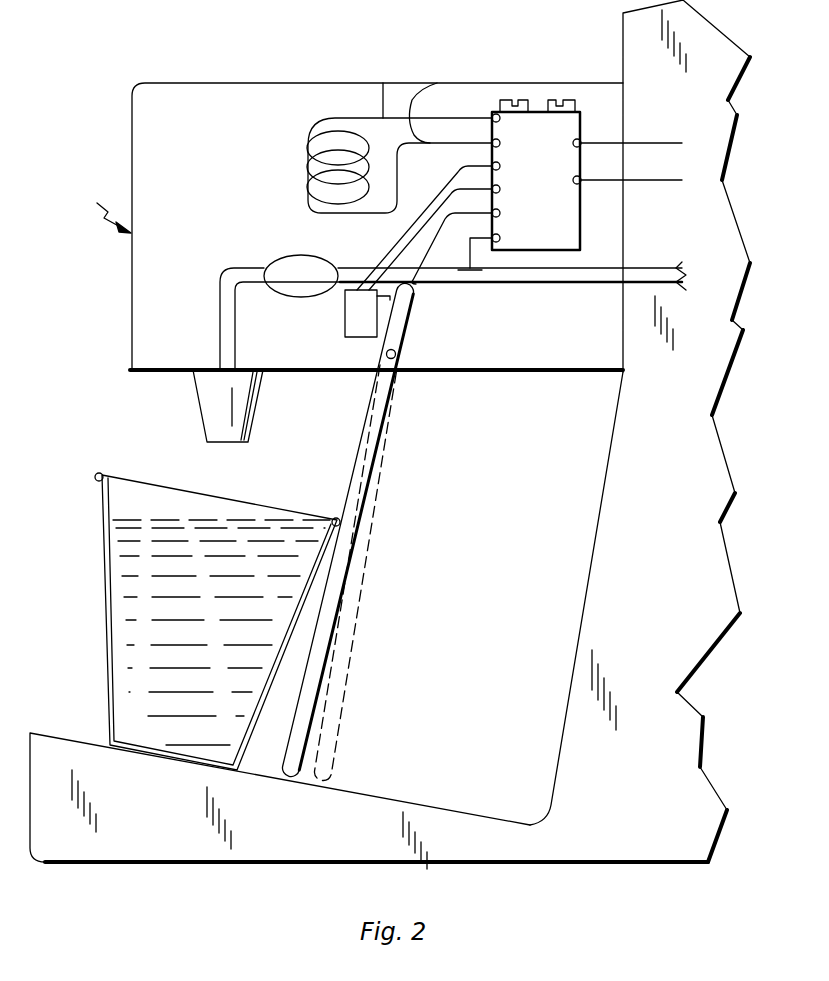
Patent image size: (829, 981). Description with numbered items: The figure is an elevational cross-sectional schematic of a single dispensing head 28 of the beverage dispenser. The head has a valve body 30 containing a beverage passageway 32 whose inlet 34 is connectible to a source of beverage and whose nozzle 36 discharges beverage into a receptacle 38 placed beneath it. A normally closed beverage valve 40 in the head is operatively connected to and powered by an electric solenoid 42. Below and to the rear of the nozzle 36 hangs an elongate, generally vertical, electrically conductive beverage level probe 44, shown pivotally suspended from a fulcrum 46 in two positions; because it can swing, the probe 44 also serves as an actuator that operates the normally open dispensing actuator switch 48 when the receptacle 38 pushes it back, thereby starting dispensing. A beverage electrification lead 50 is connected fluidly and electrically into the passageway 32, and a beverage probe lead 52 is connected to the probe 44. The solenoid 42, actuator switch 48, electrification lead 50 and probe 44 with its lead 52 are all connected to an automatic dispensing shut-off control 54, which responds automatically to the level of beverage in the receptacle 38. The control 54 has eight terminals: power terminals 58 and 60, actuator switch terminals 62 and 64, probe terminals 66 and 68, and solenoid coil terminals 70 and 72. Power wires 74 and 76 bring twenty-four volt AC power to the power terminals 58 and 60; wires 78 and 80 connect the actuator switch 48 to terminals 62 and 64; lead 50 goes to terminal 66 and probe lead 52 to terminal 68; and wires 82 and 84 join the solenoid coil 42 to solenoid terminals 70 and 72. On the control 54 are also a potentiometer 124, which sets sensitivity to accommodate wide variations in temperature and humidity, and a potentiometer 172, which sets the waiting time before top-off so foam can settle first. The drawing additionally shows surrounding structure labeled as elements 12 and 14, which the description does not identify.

The wall 12 is at (651, 555).
The ground surface 14 is at (353, 792).
The dispensing head 28 is at (96, 204).
The valve body 30 is at (132, 365).
The beverage passageway 32 is at (220, 304).
The inlet 34 is at (625, 268).
The nozzle 36 is at (206, 432).
The receptacle 38 is at (104, 575).
The beverage valve 40 is at (282, 258).
The electric solenoid 42 is at (310, 166).
The beverage level probe 44 is at (358, 553).
The fulcrum 46 is at (400, 358).
The dispensing actuator switch 48 is at (345, 327).
The beverage electrification lead 50 is at (472, 286).
The beverage probe lead 52 is at (427, 278).
The automatic dispensing shut-off control 54 is at (488, 111).
The power terminal 58 is at (580, 128).
The power terminal 60 is at (579, 184).
The actuator switch terminal 62 is at (500, 166).
The actuator switch terminal 64 is at (500, 189).
The probe terminal 66 is at (500, 238).
The probe terminal 68 is at (500, 213).
The solenoid coil terminal 70 is at (500, 118).
The solenoid coil terminal 72 is at (500, 143).
The power wire 74 is at (626, 143).
The power wire 76 is at (632, 180).
The wire 78 is at (452, 182).
The wire 80 is at (403, 257).
The wire 82 is at (388, 82).
The wire 84 is at (438, 83).
The potentiometer 124 is at (506, 100).
The potentiometer 172 is at (553, 100).